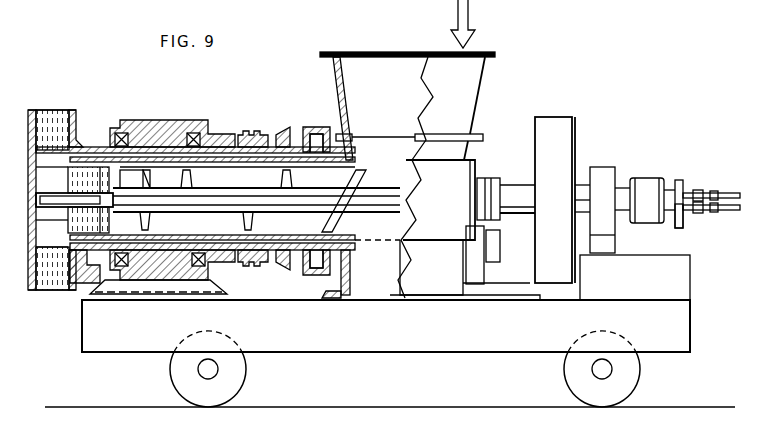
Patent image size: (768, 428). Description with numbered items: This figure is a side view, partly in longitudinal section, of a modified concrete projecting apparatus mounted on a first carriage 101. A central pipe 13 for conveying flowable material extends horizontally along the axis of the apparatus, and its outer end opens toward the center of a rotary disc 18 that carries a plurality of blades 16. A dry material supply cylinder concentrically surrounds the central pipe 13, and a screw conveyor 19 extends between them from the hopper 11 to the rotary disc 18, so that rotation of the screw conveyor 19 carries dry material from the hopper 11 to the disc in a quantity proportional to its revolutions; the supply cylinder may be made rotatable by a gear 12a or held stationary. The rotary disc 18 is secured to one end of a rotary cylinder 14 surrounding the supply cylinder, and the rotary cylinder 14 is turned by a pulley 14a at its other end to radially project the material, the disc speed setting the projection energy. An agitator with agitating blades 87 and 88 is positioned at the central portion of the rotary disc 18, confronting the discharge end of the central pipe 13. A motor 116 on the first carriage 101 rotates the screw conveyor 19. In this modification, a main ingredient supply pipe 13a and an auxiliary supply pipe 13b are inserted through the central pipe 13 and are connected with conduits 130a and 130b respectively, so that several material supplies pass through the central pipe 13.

The hopper 11 is at (465, 103).
The gear 12a is at (292, 132).
The central pipe 13 is at (522, 190).
The main ingredient supply pipe 13a is at (688, 195).
The auxiliary supply pipe 13b is at (682, 222).
The conduit 130a is at (728, 193).
The conduit 130b is at (734, 212).
The rotary cylinder 14 is at (173, 147).
The pulley 14a is at (248, 130).
The blades 16 is at (58, 120).
The rotary disc 18 is at (58, 162).
The screw conveyor 19 is at (322, 214).
The agitating blade 87 is at (78, 198).
The agitating blade 88 is at (85, 262).
The first carriage 101 is at (272, 346).
The motor 116 is at (488, 262).